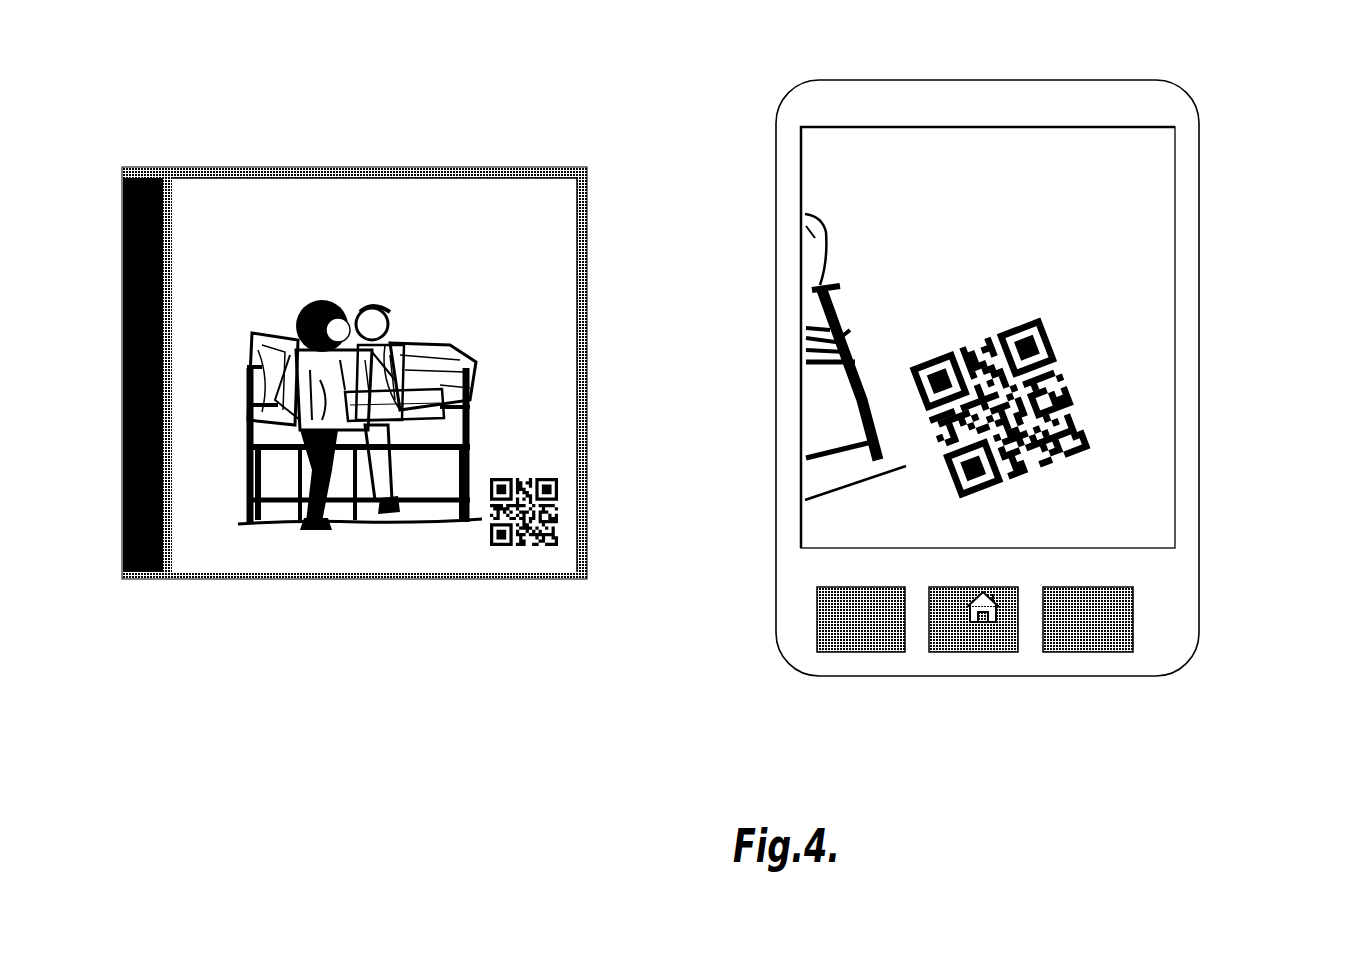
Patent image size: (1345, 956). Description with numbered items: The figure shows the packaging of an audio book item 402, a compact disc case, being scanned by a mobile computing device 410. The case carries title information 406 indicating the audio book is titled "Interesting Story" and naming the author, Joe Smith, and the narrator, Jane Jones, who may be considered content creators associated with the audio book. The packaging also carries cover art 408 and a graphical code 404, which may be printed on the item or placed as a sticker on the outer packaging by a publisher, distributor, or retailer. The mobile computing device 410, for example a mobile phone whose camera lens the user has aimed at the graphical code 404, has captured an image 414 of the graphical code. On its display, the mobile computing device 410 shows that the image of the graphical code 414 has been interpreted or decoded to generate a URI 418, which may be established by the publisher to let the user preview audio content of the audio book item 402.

The audio book item 402 is at (392, 147).
The graphical code 404 is at (562, 525).
The title information 406 is at (522, 215).
The cover art 408 is at (493, 388).
The mobile computing device 410 is at (982, 62).
The image of the graphical code 414 is at (1082, 370).
The URI 418 is at (1105, 202).